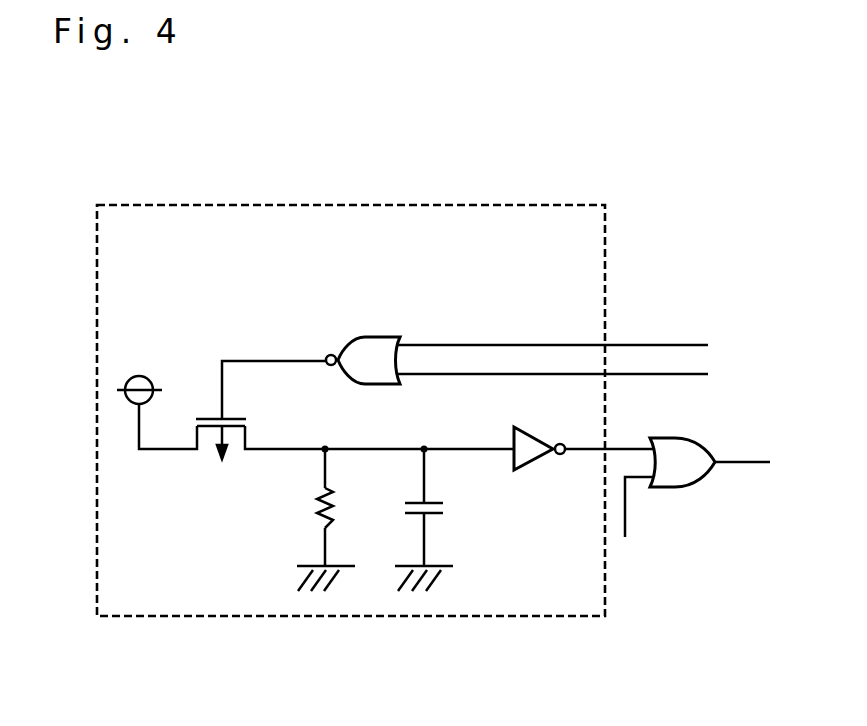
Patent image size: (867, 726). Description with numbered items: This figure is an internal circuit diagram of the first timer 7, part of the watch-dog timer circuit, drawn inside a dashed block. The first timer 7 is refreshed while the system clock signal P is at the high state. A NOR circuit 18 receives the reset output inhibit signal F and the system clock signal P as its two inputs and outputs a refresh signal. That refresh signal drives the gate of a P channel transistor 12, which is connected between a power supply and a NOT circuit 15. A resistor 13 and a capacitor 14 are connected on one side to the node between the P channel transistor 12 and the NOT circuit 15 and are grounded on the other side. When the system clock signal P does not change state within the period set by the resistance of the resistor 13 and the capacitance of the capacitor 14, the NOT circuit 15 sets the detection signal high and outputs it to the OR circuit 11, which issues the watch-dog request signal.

The first timer 7 is at (540, 205).
The NOR circuit 18 is at (370, 337).
The P channel transistor 12 is at (212, 419).
The resistor 13 is at (312, 518).
The capacitor 14 is at (430, 518).
The NOT circuit 15 is at (535, 462).
The OR circuit 11 is at (690, 487).